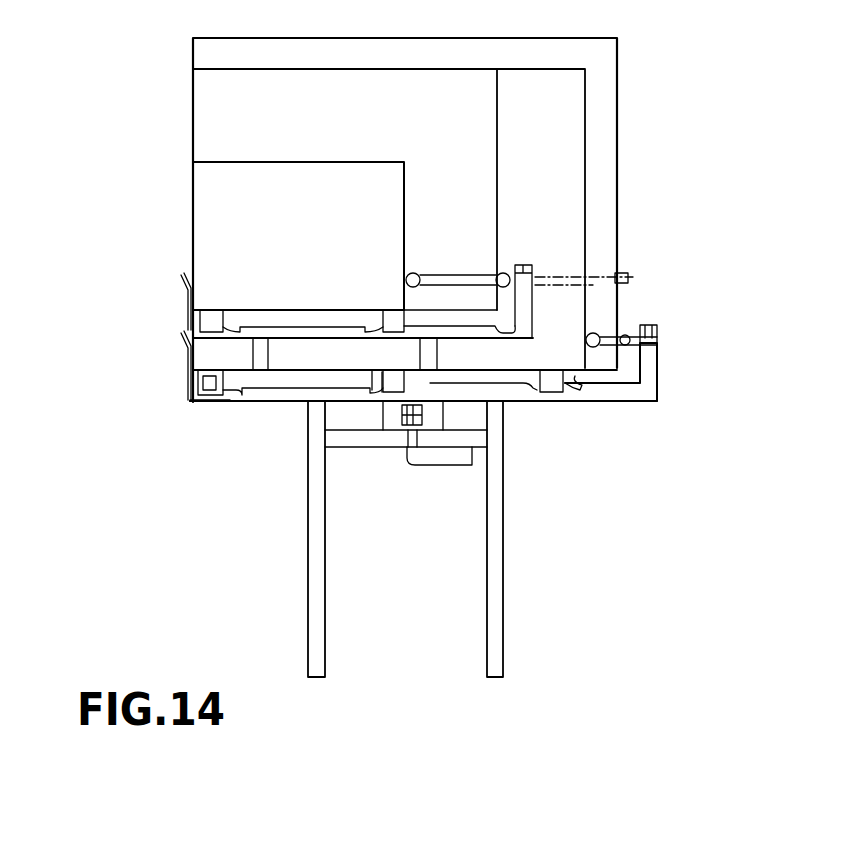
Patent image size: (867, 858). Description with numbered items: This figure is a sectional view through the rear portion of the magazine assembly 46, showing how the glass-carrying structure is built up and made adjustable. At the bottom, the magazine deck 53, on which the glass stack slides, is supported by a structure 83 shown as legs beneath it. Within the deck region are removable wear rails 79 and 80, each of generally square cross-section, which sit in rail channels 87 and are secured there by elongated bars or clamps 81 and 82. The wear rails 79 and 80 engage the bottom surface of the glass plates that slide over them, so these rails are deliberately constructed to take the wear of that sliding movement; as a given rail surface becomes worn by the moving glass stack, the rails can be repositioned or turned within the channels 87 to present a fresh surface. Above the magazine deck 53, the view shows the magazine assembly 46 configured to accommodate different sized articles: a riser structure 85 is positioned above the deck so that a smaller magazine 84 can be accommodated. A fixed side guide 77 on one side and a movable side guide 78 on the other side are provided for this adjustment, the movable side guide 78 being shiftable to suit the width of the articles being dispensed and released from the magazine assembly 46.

The magazine assembly 46 is at (623, 167).
The smaller magazine 84 is at (193, 233).
The riser structure 85 is at (272, 357).
The movable side guide 78 is at (603, 332).
The fixed side guide 77 is at (187, 368).
The wear rail 79 is at (210, 382).
The rail channel 87 is at (212, 402).
The elongated bar or clamp 81 is at (240, 393).
The magazine deck 53 is at (280, 400).
The support structure 83 is at (505, 518).
The wear rail 80 is at (398, 378).
The elongated bar or clamp 82 is at (378, 378).